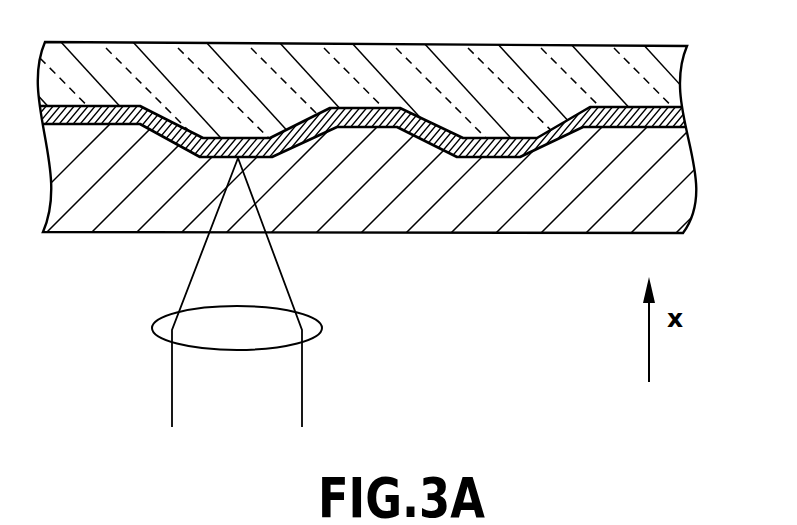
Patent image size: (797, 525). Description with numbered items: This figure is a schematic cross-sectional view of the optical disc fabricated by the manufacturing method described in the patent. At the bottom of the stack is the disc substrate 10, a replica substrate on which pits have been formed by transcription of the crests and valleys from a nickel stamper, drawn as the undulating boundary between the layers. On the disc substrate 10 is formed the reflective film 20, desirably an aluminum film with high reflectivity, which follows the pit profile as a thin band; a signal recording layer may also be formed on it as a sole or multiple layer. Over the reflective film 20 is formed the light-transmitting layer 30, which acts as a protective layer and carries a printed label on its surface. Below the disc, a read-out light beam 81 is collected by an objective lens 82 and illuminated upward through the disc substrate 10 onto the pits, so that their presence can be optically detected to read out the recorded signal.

The disc substrate 10 is at (683, 195).
The reflective film 20 is at (678, 118).
The light-transmitting layer 30 is at (675, 63).
The read-out light beam 81 is at (282, 395).
The objective lens 82 is at (273, 317).